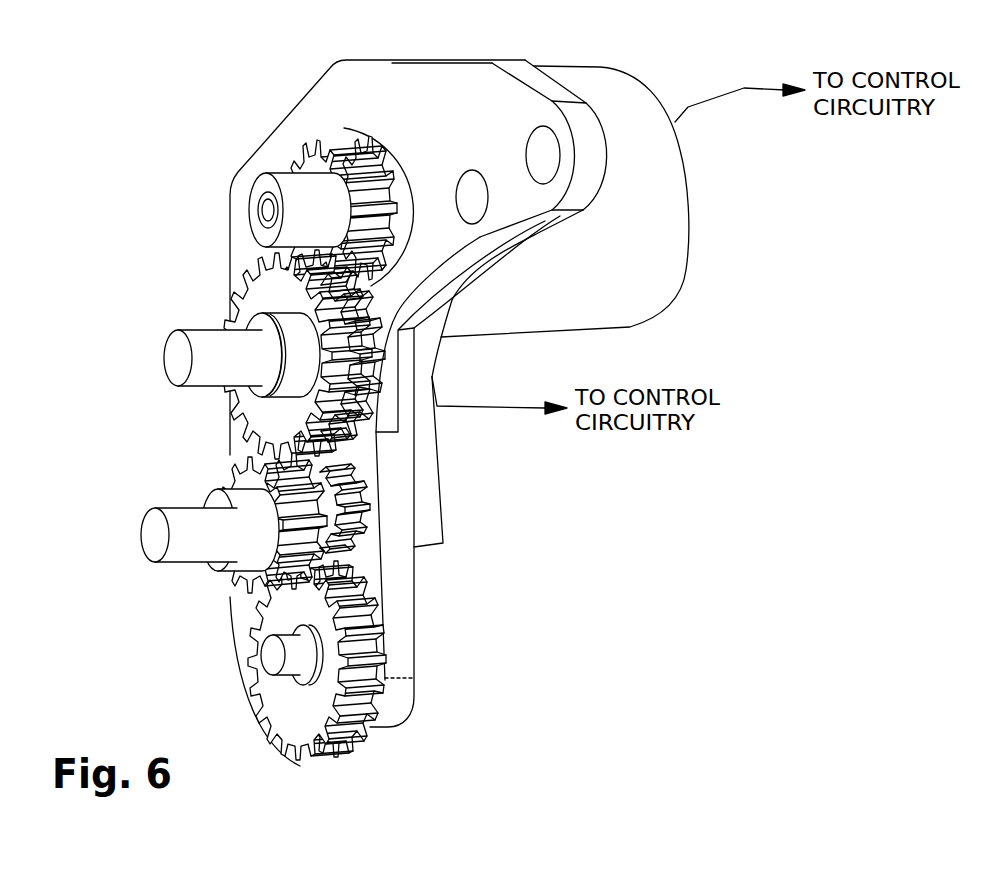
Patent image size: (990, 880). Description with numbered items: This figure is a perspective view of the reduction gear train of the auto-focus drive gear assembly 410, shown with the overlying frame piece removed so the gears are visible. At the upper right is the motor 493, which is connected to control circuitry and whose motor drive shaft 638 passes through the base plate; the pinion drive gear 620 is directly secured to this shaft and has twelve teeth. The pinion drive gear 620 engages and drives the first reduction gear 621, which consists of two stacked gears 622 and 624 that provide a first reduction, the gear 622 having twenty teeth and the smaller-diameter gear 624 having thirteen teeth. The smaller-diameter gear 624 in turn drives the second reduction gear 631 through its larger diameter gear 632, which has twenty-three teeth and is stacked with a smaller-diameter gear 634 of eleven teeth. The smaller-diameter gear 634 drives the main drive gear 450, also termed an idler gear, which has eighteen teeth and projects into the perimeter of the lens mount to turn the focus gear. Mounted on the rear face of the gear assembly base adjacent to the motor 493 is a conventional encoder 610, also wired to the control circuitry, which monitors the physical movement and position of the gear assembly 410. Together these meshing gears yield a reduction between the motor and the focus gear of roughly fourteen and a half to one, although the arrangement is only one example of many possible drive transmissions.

The gear assembly 410 is at (495, 51).
The motor 493 is at (675, 182).
The pinion drive gear 620 is at (355, 148).
The motor drive shaft 638 is at (244, 210).
The first reduction gear 621 is at (246, 301).
The stacked gear 622 is at (364, 340).
The smaller-diameter gear 624 is at (420, 324).
The second reduction gear 631 is at (216, 476).
The smaller-diameter gear 634 is at (260, 518).
The larger diameter gear 632 is at (334, 518).
The main drive gear 450 is at (330, 648).
The encoder 610 is at (428, 468).